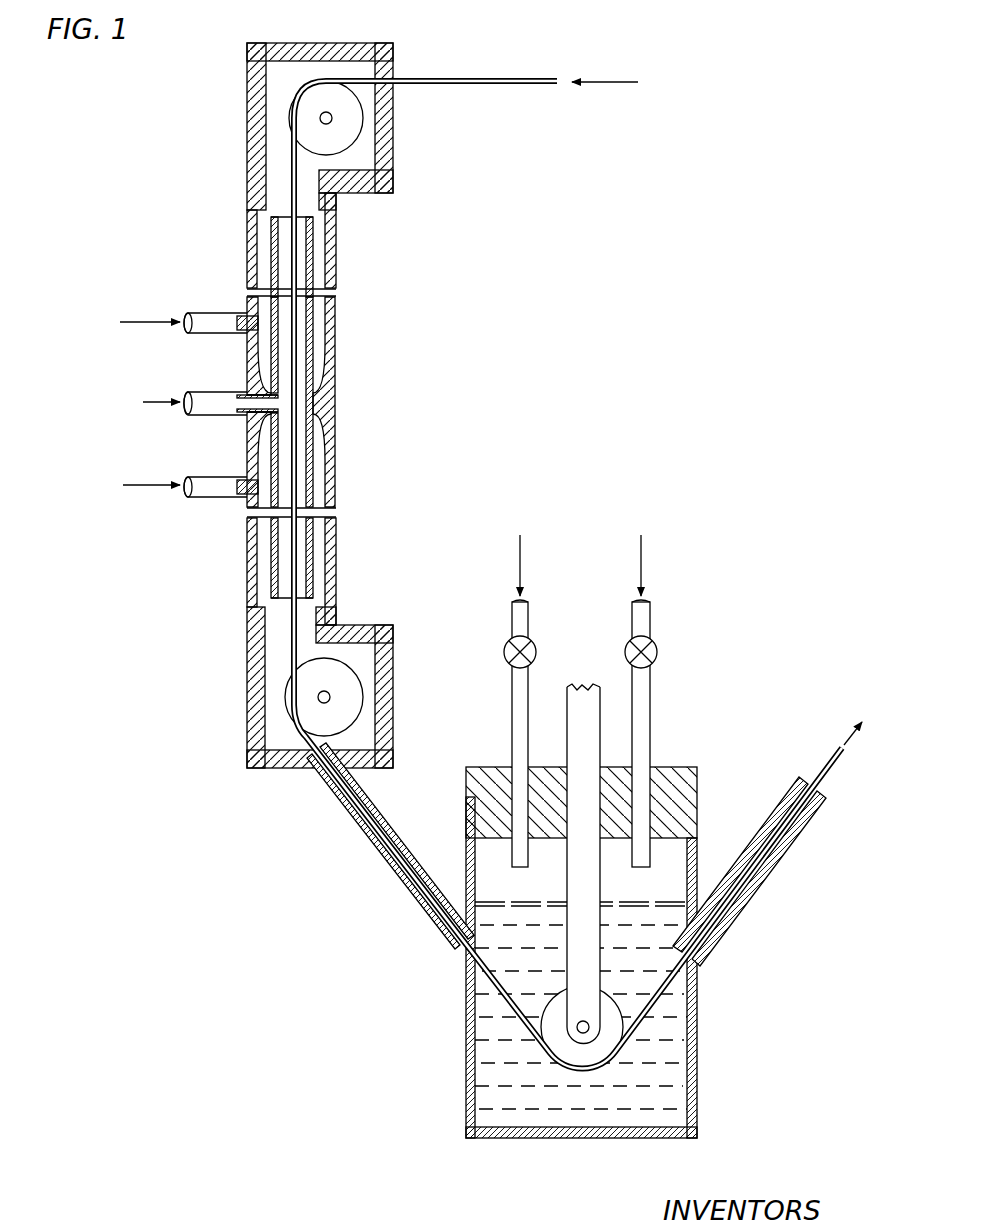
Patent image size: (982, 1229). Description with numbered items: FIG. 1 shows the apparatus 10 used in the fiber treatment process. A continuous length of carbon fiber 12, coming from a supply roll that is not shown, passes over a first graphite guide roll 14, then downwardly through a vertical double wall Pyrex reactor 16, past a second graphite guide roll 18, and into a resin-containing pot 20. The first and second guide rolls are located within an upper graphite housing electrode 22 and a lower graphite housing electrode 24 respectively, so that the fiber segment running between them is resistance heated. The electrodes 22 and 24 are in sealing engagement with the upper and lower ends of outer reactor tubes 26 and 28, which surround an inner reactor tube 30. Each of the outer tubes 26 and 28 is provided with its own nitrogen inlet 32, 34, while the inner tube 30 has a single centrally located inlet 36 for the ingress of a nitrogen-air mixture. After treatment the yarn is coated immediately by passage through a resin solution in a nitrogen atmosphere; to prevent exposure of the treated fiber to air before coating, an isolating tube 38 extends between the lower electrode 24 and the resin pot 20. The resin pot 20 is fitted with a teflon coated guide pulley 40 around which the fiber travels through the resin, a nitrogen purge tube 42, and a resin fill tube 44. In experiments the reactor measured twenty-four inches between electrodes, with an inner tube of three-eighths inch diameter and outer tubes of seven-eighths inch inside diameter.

The apparatus 10 is at (456, 258).
The carbon fiber 12 is at (517, 68).
The first graphite guide roll 14 is at (358, 118).
The vertical double wall Pyrex reactor 16 is at (240, 238).
The second graphite guide roll 18 is at (358, 688).
The resin-containing pot 20 is at (697, 987).
The upper graphite housing electrode 22 is at (247, 96).
The lower graphite housing electrode 24 is at (250, 656).
The upper outer reactor tube 26 is at (337, 251).
The lower outer reactor tube 28 is at (337, 545).
The inner reactor tube 30 is at (318, 409).
The nitrogen inlet 32 is at (200, 314).
The nitrogen inlet 34 is at (215, 497).
The centrally located inlet 36 is at (233, 416).
The isolating tube 38 is at (362, 830).
The teflon coated guide pulley 40 is at (562, 1045).
The nitrogen purge tube 42 is at (510, 710).
The resin fill tube 44 is at (652, 694).